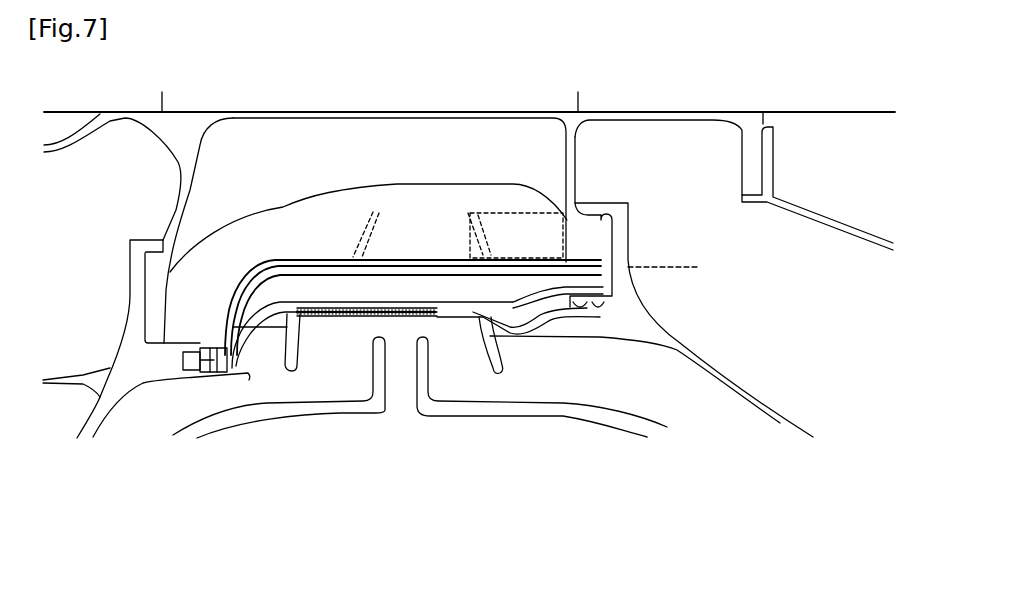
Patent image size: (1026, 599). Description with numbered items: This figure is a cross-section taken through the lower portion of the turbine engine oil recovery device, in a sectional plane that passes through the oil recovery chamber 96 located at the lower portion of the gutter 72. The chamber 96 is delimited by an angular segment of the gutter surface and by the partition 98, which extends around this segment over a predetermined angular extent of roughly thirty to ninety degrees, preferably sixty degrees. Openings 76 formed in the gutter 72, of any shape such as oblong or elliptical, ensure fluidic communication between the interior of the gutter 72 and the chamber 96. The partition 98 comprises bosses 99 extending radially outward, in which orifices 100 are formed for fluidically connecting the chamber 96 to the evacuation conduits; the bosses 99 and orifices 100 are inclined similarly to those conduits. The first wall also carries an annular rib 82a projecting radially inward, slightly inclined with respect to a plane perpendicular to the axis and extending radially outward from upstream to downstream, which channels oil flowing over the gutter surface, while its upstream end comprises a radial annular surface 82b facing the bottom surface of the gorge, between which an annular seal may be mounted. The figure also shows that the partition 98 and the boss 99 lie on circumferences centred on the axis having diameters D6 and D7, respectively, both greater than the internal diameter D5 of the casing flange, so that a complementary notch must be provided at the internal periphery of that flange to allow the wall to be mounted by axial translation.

The orifices 100 is at (397, 217).
The bosses 99 is at (477, 217).
The partition 98 is at (270, 262).
The oil recovery chamber 96 is at (437, 290).
The openings 76 is at (436, 314).
The gutter 72 is at (350, 325).
The annular rib 82a is at (313, 335).
The radial annular surface 82b is at (497, 370).
The diameter D6 is at (521, 276).
The diameter D7 is at (565, 225).
The internal diameter D5 is at (678, 272).